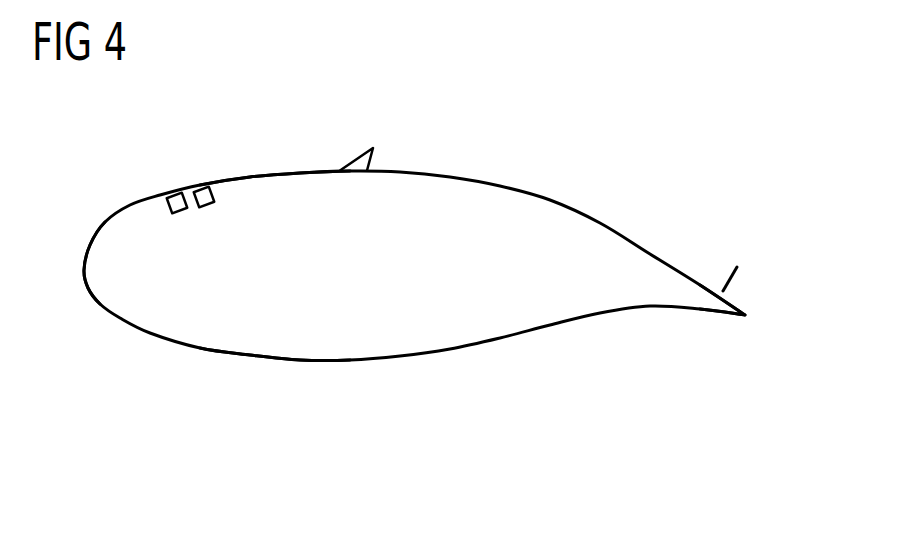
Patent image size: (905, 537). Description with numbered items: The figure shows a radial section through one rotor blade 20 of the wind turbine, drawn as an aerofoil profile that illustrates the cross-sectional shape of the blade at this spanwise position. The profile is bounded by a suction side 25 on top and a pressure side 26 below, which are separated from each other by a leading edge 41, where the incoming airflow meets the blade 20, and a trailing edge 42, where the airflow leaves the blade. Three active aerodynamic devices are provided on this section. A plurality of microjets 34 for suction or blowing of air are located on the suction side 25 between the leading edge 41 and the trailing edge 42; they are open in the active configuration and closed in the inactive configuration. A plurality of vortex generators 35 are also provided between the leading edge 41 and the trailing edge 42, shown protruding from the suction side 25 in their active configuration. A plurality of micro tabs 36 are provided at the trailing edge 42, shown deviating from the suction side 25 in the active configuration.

The rotor blade 20 is at (623, 252).
The suction side 25 is at (276, 171).
The pressure side 26 is at (418, 357).
The microjets 34 is at (176, 192).
The vortex generators 35 is at (362, 162).
The micro tabs 36 is at (733, 281).
The leading edge 41 is at (92, 302).
The trailing edge 42 is at (748, 318).